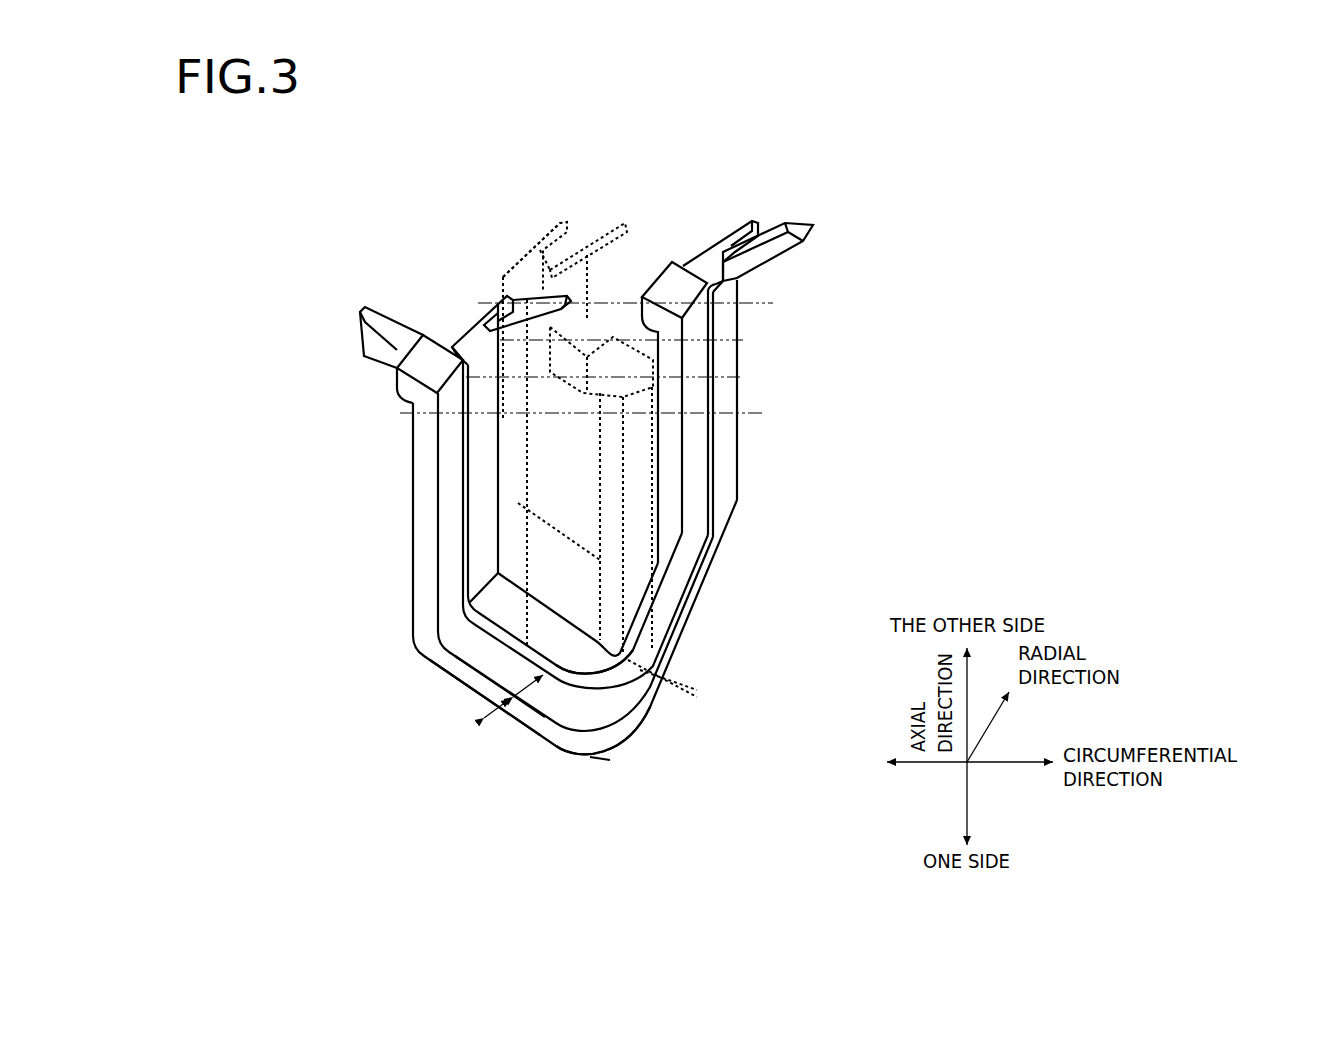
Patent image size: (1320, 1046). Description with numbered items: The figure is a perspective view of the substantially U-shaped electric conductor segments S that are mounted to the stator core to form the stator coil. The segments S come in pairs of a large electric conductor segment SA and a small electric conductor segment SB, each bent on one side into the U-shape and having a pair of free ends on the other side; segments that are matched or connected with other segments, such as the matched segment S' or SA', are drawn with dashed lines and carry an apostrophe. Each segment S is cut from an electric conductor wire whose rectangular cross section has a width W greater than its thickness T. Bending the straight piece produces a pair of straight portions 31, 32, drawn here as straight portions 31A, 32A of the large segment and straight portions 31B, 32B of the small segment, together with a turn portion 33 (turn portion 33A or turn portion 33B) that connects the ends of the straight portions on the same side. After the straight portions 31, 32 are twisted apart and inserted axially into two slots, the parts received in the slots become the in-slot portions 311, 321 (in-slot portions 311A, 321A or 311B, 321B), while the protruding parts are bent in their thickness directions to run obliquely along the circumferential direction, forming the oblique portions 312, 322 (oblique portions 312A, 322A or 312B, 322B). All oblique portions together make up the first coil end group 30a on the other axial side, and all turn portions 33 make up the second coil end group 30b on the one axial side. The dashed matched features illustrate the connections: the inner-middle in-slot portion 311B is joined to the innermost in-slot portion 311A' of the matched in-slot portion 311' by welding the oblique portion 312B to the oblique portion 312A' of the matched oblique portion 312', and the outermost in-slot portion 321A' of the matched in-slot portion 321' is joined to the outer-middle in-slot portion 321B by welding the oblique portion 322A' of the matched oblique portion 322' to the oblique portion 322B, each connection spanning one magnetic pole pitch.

The first coil end group 30a is at (531, 250).
The second coil end group 30b is at (636, 807).
The straight portion 31 is at (521, 559).
The straight portion of large electric conductor segment 31A is at (427, 537).
The straight portion of small electric conductor segment 31B is at (483, 540).
The in-slot portion 311 is at (491, 545).
The in-slot portion of large electric conductor segment 311A is at (516, 562).
The inner-middle in-slot portion 311B is at (453, 453).
The oblique portion 312 is at (441, 433).
The oblique portion of large electric conductor segment 312A is at (401, 327).
The oblique portion of small electric conductor segment 312B is at (488, 298).
The straight portion 32 is at (776, 406).
The straight portion of large electric conductor segment 32A is at (730, 435).
The straight portion of small electric conductor segment 32B is at (697, 488).
The in-slot portion 321 is at (774, 422).
The in-slot portion of large electric conductor segment 321A is at (782, 409).
The outer-middle in-slot portion 321B is at (693, 400).
The oblique portion 322 is at (786, 225).
The oblique portion of large electric conductor segment 322A is at (765, 228).
The oblique portion of small electric conductor segment 322B is at (683, 262).
The turn portion 33 is at (632, 754).
The turn portion of large electric conductor segment 33A is at (620, 737).
The turn portion of small electric conductor segment 33B is at (627, 688).
The electric conductor segment S is at (456, 716).
The large electric conductor segment SA is at (466, 700).
The small electric conductor segment SB is at (470, 680).
The thickness T is at (497, 712).
The width W is at (530, 694).
The in-slot portion of matched electric conductor segment 311' is at (714, 483).
The innermost in-slot portion 311A' is at (714, 483).
The in-slot portion of matched electric conductor segment 321' is at (766, 542).
The outermost in-slot portion 321A' is at (766, 542).
The oblique portion of matched electric conductor segment 312' is at (589, 208).
The oblique portion of matched large electric conductor segment 312A' is at (589, 208).
The oblique portion of matched electric conductor segment 322' is at (514, 371).
The oblique portion of matched large electric conductor segment 322A' is at (514, 371).
The matched electric conductor segment S' is at (674, 590).
The matched large electric conductor segment SA' is at (674, 590).